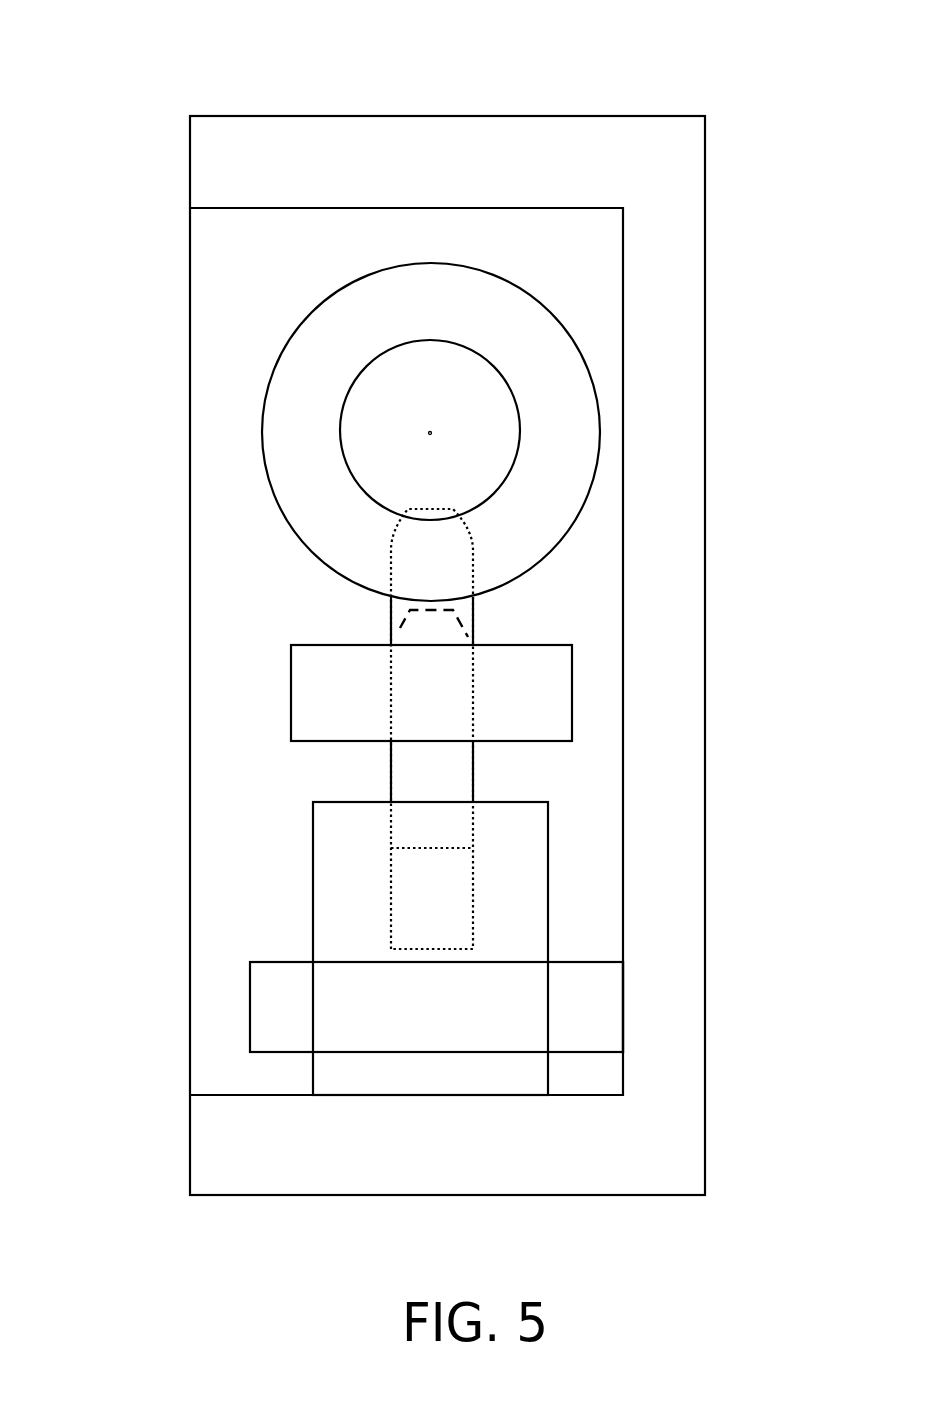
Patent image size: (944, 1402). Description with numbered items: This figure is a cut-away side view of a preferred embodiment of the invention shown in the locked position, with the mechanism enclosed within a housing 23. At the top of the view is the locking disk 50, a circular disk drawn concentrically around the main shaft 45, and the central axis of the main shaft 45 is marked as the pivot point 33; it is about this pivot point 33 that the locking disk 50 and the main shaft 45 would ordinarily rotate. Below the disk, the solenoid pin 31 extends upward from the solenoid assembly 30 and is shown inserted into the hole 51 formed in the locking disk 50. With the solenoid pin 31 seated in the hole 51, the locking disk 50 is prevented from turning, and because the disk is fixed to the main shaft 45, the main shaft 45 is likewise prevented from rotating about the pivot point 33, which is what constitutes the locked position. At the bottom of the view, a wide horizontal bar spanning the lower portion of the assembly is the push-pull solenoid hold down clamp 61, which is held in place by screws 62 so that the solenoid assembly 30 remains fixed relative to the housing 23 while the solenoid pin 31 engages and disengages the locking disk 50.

The housing 23 is at (325, 116).
The pivot point 33 is at (430, 433).
The main shaft 45 is at (503, 413).
The locking disk 50 is at (263, 462).
The hole 51 is at (392, 535).
The solenoid pin 31 is at (392, 622).
The motor block 30 is at (313, 910).
The screws 62 is at (251, 1012).
The push-pull solenoid hold down clamp 61 is at (610, 1005).